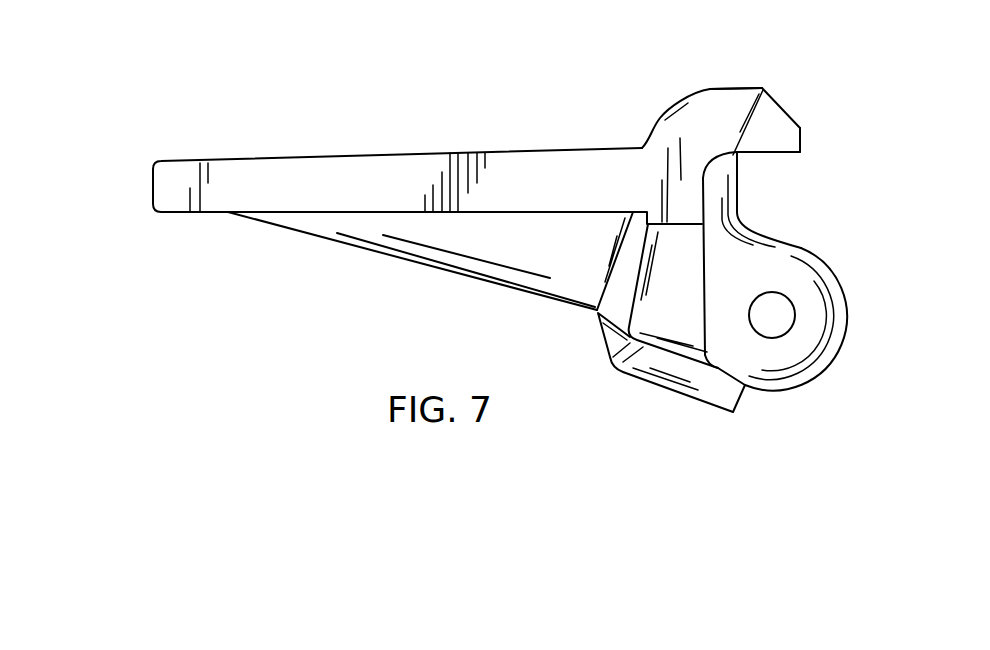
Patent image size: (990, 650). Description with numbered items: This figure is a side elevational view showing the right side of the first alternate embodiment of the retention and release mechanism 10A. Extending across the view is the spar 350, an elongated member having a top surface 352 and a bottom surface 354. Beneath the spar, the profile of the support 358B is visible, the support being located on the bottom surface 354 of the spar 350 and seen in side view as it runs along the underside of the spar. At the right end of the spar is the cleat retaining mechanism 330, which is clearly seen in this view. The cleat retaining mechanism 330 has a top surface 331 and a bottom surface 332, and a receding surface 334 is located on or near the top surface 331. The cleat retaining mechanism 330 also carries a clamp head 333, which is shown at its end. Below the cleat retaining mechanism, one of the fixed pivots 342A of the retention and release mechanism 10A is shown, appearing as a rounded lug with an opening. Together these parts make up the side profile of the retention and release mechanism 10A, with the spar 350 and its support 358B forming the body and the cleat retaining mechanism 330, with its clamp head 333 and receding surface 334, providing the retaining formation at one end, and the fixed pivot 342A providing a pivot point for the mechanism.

The retention and release mechanism 10A is at (866, 111).
The cleat retaining mechanism 330 is at (703, 130).
The top surface 331 is at (723, 88).
The bottom surface 332 is at (777, 157).
The clamp head 333 is at (803, 144).
The receding surface 334 is at (787, 111).
The fixed pivot 342A is at (803, 343).
The spar 350 is at (263, 172).
The top surface 352 is at (367, 156).
The bottom surface 354 is at (213, 214).
The support 358B is at (458, 250).